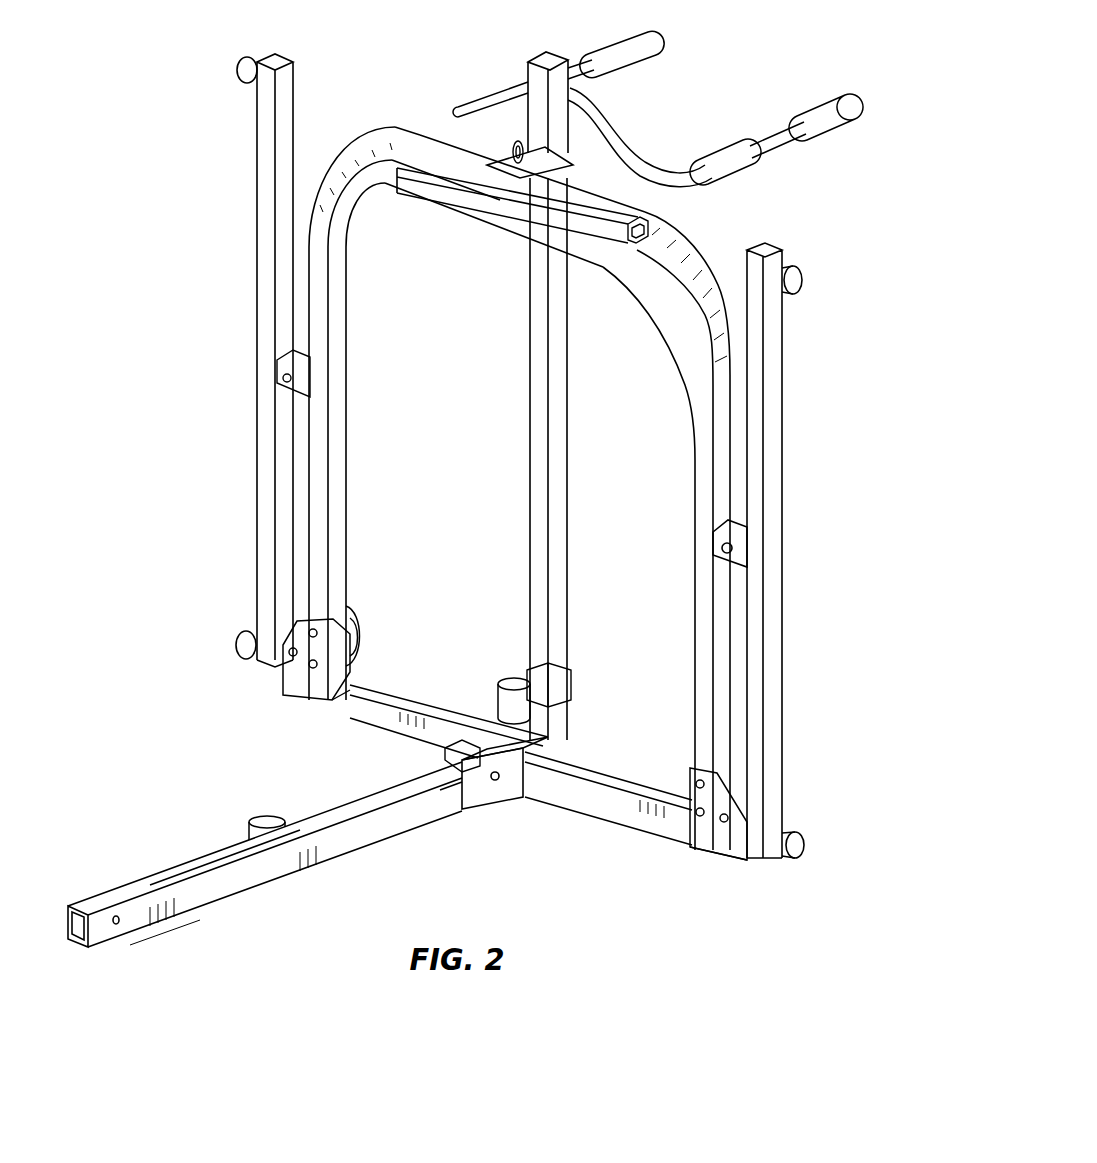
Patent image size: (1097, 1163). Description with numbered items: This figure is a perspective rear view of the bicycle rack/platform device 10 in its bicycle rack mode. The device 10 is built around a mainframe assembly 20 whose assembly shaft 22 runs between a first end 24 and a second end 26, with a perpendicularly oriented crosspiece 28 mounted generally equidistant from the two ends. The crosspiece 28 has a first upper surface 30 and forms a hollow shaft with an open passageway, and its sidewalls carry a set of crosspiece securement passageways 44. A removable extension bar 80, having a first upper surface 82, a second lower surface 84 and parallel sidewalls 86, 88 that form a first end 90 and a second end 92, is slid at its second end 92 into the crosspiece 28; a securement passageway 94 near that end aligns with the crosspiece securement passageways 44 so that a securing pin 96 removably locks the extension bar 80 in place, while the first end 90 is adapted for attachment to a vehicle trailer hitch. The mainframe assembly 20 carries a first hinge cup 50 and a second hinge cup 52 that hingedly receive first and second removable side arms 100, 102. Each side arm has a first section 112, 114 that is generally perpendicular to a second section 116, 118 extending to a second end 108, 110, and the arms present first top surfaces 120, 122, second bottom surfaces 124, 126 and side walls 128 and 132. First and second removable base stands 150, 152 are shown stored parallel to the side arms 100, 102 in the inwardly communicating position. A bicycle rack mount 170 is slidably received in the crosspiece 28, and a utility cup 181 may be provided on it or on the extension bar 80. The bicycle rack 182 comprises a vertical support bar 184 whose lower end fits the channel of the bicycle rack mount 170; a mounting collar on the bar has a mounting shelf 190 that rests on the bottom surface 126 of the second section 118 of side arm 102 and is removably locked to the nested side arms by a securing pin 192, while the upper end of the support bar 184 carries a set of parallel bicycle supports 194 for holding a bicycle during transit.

The bicycle rack/platform device 10 is at (681, 906).
The mainframe assembly 20 is at (610, 815).
The assembly shaft 22 is at (421, 712).
The first end 24 is at (690, 830).
The second end 26 is at (330, 713).
The crosspiece 28 is at (501, 807).
The first upper surface 30 is at (492, 742).
The crosspiece securement passageways 44 is at (497, 780).
The first hinge cup 50 is at (688, 790).
The second hinge cup 52 is at (287, 688).
The removable extension bar 80 is at (265, 885).
The first upper surface 82 is at (170, 877).
The second lower surface 84 is at (157, 920).
The parallel sidewall 86 is at (93, 893).
The parallel sidewall 88 is at (187, 890).
The first end 90 is at (77, 943).
The second end 92 is at (463, 803).
The securement passageway 94 is at (117, 922).
The securing pin 96 is at (458, 740).
The first removable side arm 100 is at (527, 453).
The second removable side arm 102 is at (383, 142).
The second end 108 is at (382, 185).
The second end 110 is at (650, 232).
The first section 112 is at (693, 596).
The first section 114 is at (348, 508).
The second section 116 is at (498, 226).
The second section 118 is at (462, 140).
The first top surface 120 is at (603, 268).
The first top surface 122 is at (340, 290).
The second bottom surface 124 is at (680, 283).
The second bottom surface 126 is at (415, 128).
The side wall 128 is at (702, 460).
The side wall 132 is at (320, 333).
The first removable base stand 150 is at (778, 437).
The second removable base stand 152 is at (265, 275).
The bicycle rack mount 170 is at (566, 686).
The utility cup 181 is at (514, 682).
The bicycle rack 182 is at (573, 70).
The vertical support bar 184 is at (537, 407).
The mounting shelf 190 is at (575, 130).
The securing pin 192 is at (517, 145).
The parallel bicycle supports 194 is at (630, 50).